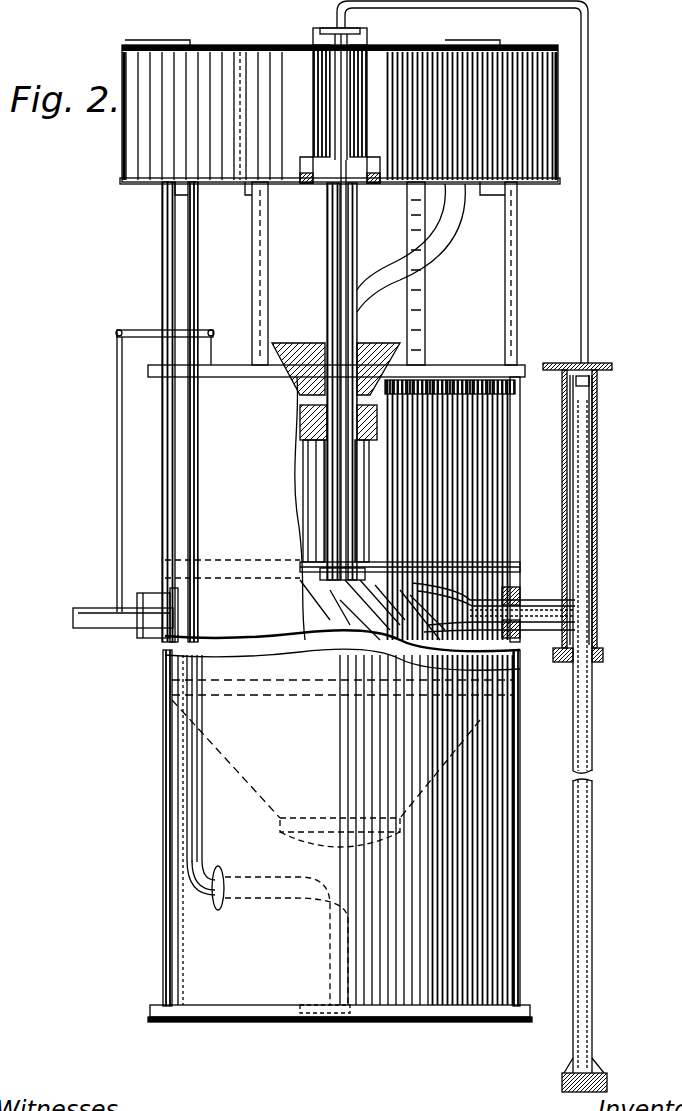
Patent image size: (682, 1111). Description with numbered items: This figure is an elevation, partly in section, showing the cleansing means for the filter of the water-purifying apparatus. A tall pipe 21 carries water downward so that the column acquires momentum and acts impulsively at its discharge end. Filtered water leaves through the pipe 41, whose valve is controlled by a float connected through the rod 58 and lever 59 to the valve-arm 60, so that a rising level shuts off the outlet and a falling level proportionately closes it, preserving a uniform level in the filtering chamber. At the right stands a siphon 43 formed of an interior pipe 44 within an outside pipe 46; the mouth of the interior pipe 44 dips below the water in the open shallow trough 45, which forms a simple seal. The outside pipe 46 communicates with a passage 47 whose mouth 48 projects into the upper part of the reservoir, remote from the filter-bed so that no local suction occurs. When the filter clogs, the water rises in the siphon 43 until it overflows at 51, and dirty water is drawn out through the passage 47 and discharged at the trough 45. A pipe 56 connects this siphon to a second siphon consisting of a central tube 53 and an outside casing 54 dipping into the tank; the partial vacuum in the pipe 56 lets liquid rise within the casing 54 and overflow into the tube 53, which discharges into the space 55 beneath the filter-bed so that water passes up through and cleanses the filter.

The pipe 21 is at (185, 780).
The pipe 41 is at (88, 628).
The siphon 43 is at (590, 465).
The interior pipe 44 is at (590, 614).
The open shallow trough 45 is at (600, 1075).
The outside pipe 46 is at (597, 545).
The passage 47 is at (535, 627).
The mouth 48 is at (470, 593).
The overflow point 51 is at (590, 390).
The central tube 53 is at (345, 330).
The outside casing 54 is at (365, 42).
The space beneath the filter-bed 55 is at (383, 577).
The pipe 56 is at (588, 306).
The rod 58 is at (125, 488).
The lever 59 is at (141, 335).
The valve-arm 60 is at (135, 620).